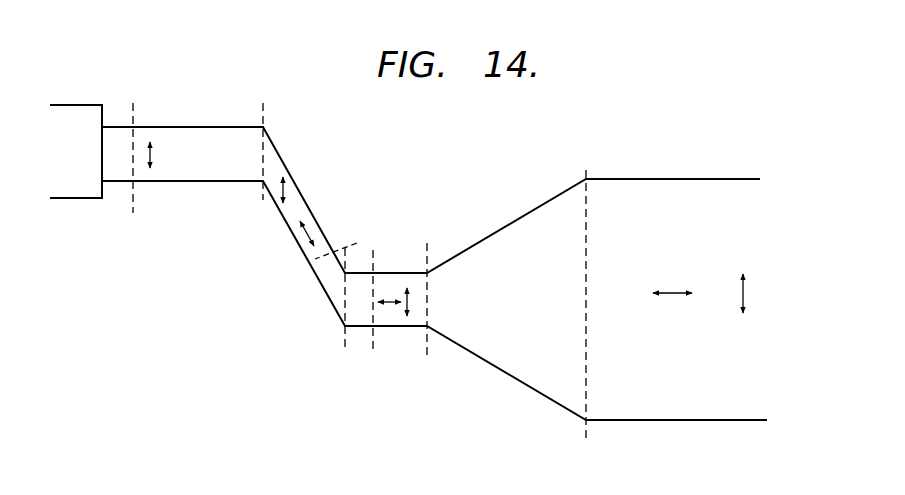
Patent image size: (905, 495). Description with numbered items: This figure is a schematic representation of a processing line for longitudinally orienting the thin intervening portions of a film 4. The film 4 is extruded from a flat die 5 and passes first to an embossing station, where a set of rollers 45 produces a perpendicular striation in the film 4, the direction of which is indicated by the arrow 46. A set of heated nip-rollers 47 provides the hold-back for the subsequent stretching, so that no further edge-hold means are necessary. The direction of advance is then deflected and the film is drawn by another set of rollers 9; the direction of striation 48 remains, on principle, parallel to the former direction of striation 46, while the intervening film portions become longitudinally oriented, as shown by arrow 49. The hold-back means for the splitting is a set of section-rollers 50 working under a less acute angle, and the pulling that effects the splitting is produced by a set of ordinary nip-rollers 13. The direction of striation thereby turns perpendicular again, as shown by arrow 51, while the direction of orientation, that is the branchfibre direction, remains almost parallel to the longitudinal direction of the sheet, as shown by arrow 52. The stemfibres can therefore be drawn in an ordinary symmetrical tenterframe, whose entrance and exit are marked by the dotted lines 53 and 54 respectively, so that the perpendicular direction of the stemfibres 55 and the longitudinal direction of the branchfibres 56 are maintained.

The film 4 is at (112, 168).
The flat die 5 is at (79, 164).
The set of rollers 9 is at (303, 267).
The set of ordinary nip-rollers 13 is at (376, 264).
The set of rollers 45 is at (133, 123).
The arrow 46 is at (151, 157).
The set of heated nip-rollers 47 is at (264, 127).
The direction of striation 48 is at (288, 190).
The arrow 49 is at (313, 222).
The set of section-rollers 50 is at (346, 338).
The arrow 51 is at (408, 287).
The arrow 52 is at (389, 305).
The dotted line 53 is at (427, 336).
The dotted line 54 is at (587, 178).
The perpendicular direction of the stemfibres 55 is at (745, 293).
The longitudinal direction of the branchfibres 56 is at (670, 292).